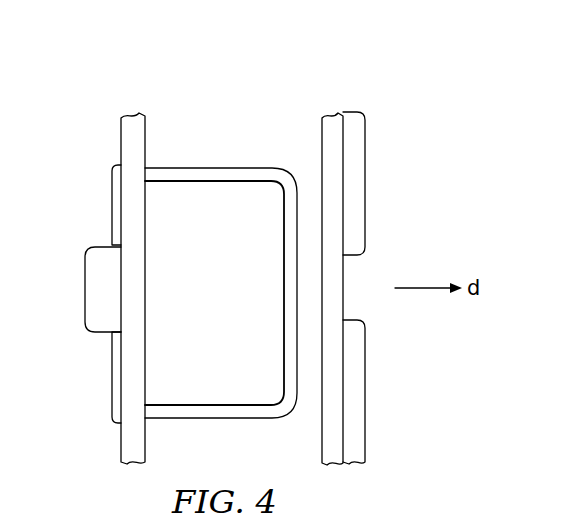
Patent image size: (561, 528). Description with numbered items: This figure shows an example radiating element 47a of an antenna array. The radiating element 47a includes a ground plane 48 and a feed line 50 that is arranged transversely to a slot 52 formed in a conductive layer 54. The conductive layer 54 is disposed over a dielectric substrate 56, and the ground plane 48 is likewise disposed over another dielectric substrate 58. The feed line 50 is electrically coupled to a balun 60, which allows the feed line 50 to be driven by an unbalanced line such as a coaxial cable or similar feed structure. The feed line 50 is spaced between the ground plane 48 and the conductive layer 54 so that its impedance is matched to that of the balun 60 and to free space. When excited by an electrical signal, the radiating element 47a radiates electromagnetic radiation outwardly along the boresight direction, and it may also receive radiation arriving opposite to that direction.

The radiating element 47a is at (265, 94).
The ground plane 48 is at (112, 203).
The feed line 50 is at (212, 182).
The slot 52 is at (390, 268).
The conductive layer 54 is at (365, 186).
The dielectric substrate 56 is at (322, 432).
The dielectric substrate 58 is at (145, 362).
The balun 60 is at (85, 289).